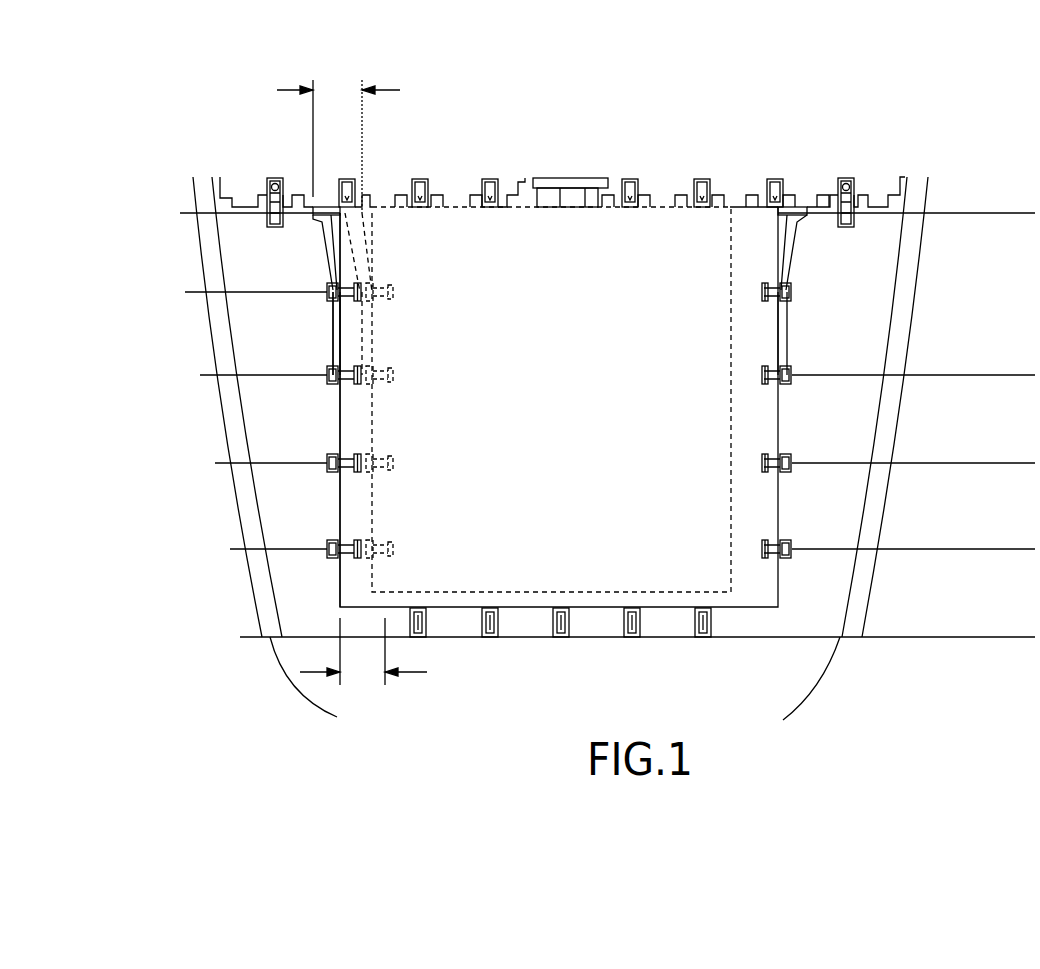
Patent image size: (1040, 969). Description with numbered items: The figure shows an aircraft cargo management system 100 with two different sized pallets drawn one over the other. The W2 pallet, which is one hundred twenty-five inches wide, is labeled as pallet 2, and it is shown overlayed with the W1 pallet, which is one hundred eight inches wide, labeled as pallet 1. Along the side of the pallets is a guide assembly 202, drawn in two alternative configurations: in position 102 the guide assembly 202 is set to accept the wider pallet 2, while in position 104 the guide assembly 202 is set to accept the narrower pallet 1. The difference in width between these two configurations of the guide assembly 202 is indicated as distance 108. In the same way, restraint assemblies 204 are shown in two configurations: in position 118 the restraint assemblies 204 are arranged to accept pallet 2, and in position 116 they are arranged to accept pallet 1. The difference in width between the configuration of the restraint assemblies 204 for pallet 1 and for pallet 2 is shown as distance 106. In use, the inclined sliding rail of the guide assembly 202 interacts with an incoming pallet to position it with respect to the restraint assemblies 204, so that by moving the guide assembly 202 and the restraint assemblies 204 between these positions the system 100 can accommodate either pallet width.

The mounting arrangement 100 is at (246, 112).
The distance 108 is at (340, 90).
The pallet 1 is at (598, 225).
The pallet 2 is at (758, 235).
The guide assembly 202 is at (323, 245).
The position 102 is at (336, 296).
The position 104 is at (336, 334).
The position 118 is at (333, 380).
The restraint assemblies 204 is at (337, 388).
The position 116 is at (336, 437).
The distance 106 is at (363, 652).